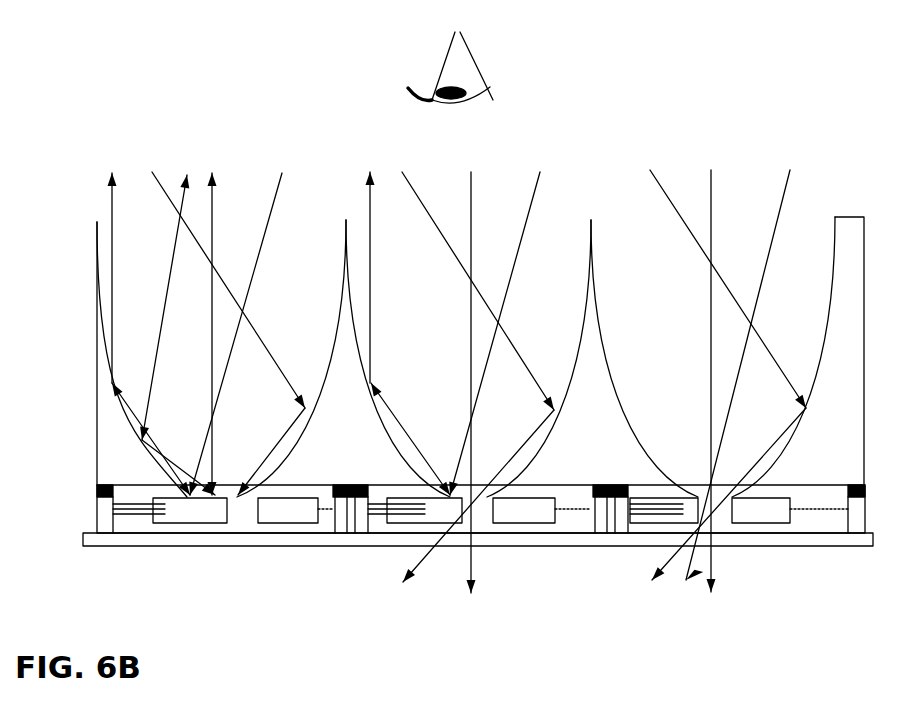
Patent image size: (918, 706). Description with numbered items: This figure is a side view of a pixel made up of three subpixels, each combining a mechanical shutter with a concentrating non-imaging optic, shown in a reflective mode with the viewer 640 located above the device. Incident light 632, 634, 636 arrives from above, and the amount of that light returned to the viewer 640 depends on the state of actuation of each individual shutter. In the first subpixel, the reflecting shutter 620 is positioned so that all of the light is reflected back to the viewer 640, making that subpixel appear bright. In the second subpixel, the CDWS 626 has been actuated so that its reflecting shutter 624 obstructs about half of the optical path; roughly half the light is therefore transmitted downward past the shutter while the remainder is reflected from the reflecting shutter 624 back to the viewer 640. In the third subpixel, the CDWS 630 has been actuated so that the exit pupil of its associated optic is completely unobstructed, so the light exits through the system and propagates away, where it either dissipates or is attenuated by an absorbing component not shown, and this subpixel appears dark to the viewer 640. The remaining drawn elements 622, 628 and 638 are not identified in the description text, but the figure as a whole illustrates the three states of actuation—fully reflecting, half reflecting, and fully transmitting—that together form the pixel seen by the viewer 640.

The reflecting shutter 620 is at (180, 510).
The light detector 622 is at (236, 517).
The reflecting shutter 624 is at (402, 517).
The CDWS 626 is at (485, 515).
The light emitter 628 is at (650, 515).
The CDWS 630 is at (722, 520).
The incident light 632 is at (711, 253).
The incident light 634 is at (527, 237).
The incident light 636 is at (275, 200).
The light ray 638 is at (195, 176).
The viewer 640 is at (495, 63).